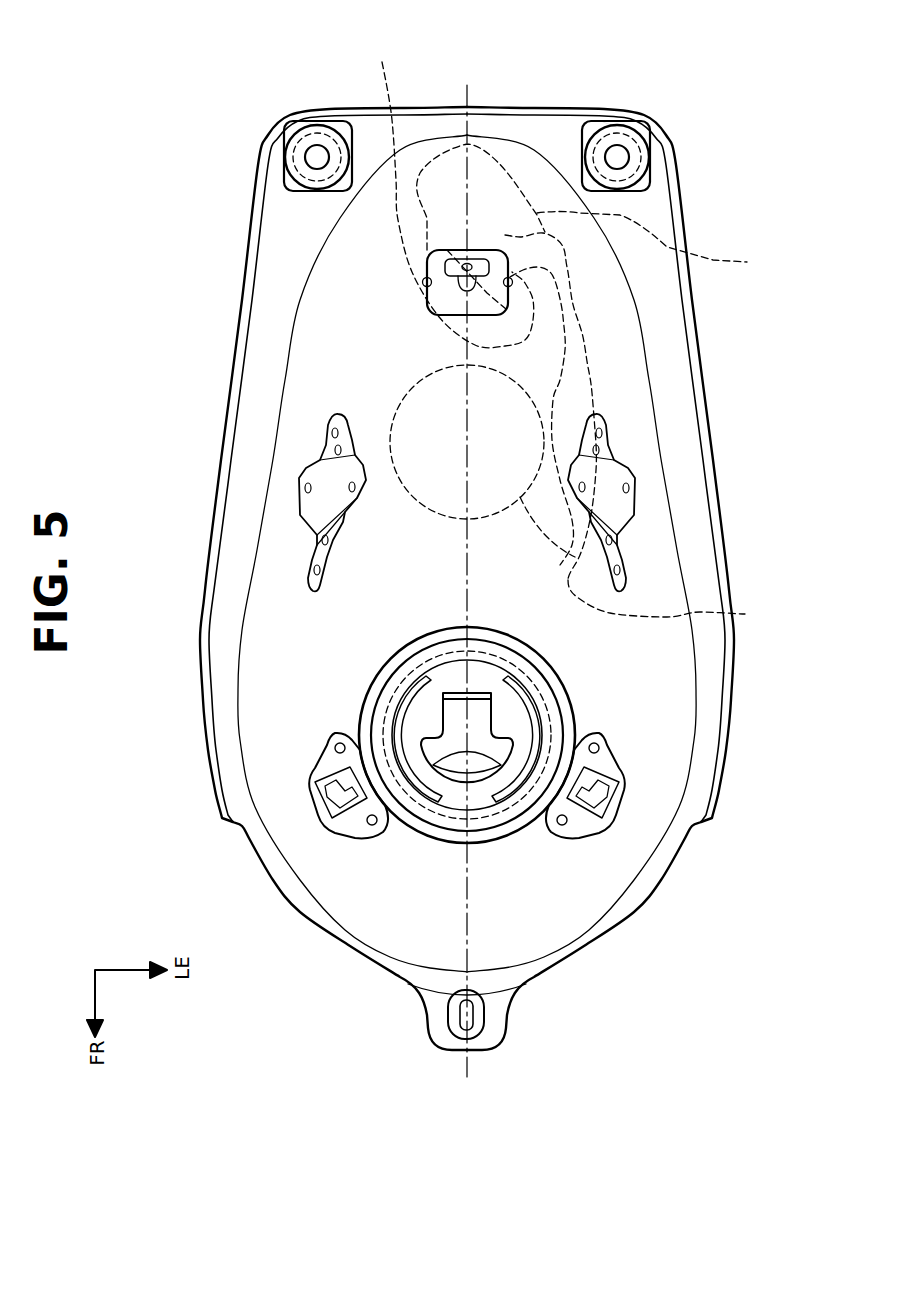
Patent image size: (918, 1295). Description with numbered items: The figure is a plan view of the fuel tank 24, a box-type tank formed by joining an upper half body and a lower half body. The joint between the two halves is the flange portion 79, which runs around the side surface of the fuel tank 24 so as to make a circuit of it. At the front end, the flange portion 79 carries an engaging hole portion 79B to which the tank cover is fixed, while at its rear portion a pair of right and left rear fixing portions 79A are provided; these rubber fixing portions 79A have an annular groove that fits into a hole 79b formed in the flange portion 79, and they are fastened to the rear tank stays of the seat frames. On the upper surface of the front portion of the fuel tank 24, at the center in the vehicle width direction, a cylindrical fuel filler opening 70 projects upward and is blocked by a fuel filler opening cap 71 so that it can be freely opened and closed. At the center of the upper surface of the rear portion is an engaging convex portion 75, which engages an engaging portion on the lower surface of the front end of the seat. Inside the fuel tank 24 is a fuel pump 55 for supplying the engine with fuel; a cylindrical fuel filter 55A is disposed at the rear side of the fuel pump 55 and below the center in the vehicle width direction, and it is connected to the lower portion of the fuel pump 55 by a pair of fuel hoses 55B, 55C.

The fuel tank 24 is at (174, 321).
The fuel pump 55 is at (413, 390).
The fuel filter 55A is at (639, 396).
The fuel hose 55B is at (573, 185).
The fuel hose 55C is at (671, 604).
The fuel filler opening 70 is at (420, 812).
The fuel filler opening cap 71 is at (373, 707).
The engaging convex portion 75 is at (427, 252).
The flange portion 79 is at (678, 392).
The rear fixing portion 79A is at (290, 157).
The hole 79b is at (315, 120).
The engaging hole portion 79B is at (458, 1013).